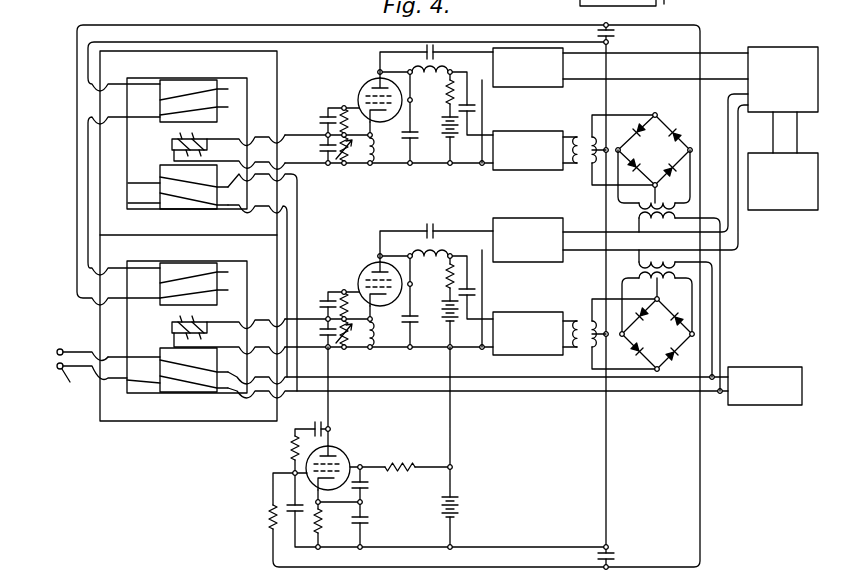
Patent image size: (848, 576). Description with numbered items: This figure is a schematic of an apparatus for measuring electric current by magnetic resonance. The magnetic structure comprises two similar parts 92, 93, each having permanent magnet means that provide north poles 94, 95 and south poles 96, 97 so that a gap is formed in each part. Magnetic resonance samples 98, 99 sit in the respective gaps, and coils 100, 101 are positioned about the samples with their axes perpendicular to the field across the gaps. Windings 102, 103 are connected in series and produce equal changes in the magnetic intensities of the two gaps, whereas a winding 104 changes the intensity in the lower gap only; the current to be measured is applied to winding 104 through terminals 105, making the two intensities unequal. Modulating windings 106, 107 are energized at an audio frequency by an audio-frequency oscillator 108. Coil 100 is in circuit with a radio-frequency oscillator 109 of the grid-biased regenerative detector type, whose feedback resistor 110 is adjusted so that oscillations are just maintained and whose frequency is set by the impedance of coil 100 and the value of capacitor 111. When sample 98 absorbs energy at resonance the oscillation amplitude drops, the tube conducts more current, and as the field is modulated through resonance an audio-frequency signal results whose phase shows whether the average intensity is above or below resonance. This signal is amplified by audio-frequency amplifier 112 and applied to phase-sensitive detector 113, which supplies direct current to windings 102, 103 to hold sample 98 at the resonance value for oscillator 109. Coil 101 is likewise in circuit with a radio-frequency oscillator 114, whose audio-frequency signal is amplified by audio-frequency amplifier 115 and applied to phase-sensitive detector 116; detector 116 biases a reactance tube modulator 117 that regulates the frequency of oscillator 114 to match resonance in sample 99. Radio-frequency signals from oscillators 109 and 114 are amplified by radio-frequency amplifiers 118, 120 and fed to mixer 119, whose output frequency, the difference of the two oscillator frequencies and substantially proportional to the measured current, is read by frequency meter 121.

The magnetic structure part 92 is at (104, 162).
The magnetic structure part 93 is at (112, 326).
The north pole 94 is at (217, 114).
The north pole 95 is at (217, 298).
The south pole 96 is at (162, 165).
The south pole 97 is at (166, 350).
The magnetic resonance sample 98 is at (217, 146).
The magnetic resonance sample 99 is at (217, 330).
The coil 100 is at (178, 136).
The coil 101 is at (178, 319).
The winding 102 is at (158, 96).
The winding 103 is at (158, 279).
The winding 104 is at (160, 360).
The terminals 105 is at (66, 380).
The modulating winding 106 is at (158, 190).
The modulating winding 107 is at (160, 376).
The audio-frequency oscillator 108 is at (762, 367).
The radio-frequency oscillator 109 is at (366, 84).
The feedback resistor 110 is at (352, 156).
The capacitor 111 is at (320, 147).
The audio-frequency amplifier 112 is at (542, 128).
The phase-sensitive detector 113 is at (654, 158).
The radio-frequency oscillator 114 is at (366, 268).
The audio-frequency amplifier 115 is at (542, 310).
The phase-sensitive detector 116 is at (657, 334).
The reactance tube modulator 117 is at (342, 450).
The radio-frequency amplifier 118 is at (511, 87).
The mixer 119 is at (783, 47).
The radio-frequency amplifier 120 is at (537, 216).
The frequency meter 121 is at (787, 210).